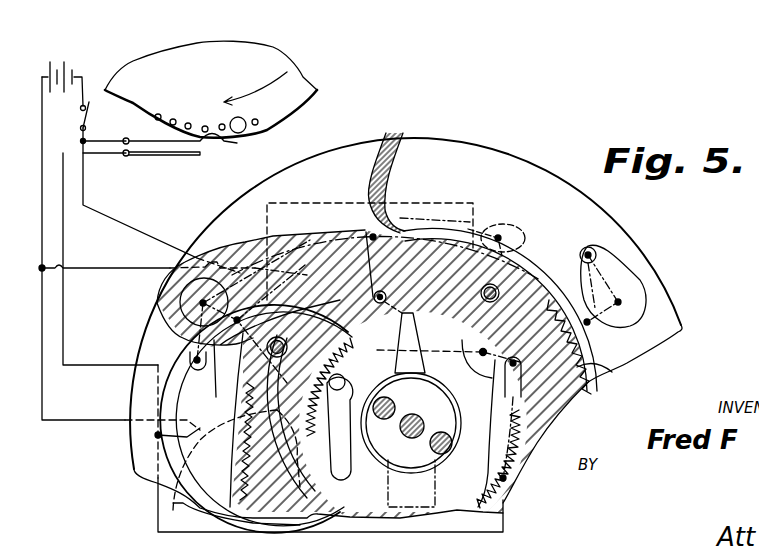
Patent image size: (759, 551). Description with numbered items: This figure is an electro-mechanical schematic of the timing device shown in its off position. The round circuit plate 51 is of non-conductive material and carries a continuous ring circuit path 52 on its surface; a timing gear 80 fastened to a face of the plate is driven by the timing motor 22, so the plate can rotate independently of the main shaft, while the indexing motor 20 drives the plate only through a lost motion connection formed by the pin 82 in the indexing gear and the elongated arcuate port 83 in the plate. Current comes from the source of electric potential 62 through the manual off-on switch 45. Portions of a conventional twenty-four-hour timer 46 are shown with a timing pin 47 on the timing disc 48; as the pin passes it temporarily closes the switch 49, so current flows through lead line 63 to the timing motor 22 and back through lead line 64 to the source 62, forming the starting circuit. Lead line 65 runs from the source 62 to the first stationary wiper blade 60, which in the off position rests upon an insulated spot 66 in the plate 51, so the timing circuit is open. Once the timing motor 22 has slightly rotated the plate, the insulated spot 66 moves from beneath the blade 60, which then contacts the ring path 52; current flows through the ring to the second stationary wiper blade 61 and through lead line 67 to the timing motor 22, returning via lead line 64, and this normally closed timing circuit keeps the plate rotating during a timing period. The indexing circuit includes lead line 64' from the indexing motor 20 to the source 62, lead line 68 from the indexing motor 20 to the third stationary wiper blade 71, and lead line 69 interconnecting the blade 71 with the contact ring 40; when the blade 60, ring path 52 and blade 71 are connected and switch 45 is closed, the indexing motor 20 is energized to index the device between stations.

The indexing motor 20 is at (400, 366).
The timing motor 22 is at (183, 503).
The contact ring 40 is at (538, 270).
The off-on switch 45 is at (91, 119).
The 24-hour timer 46 is at (203, 34).
The timing pin 47 is at (238, 136).
The timing disc 48 is at (305, 105).
The switch 49 is at (189, 155).
The circuit plate 51 is at (640, 262).
The continuous ring circuit path 52 is at (615, 372).
The first stationary wiper blade 60 is at (458, 362).
The second stationary wiper blade 61 is at (497, 470).
The source of electric potential 62 is at (72, 48).
The lead line 63 is at (64, 246).
The lead line 64 is at (119, 277).
The lead line 64' is at (174, 258).
The lead line 65 is at (103, 213).
The insulated spot 66 is at (364, 231).
The lead line 67 is at (505, 522).
The lead line 68 is at (270, 203).
The lead line 69 is at (527, 247).
The third stationary wiper blade 71 is at (505, 220).
The timing gear 80 is at (240, 459).
The pin 82 is at (345, 383).
The elongated arcuate port 83 is at (340, 371).